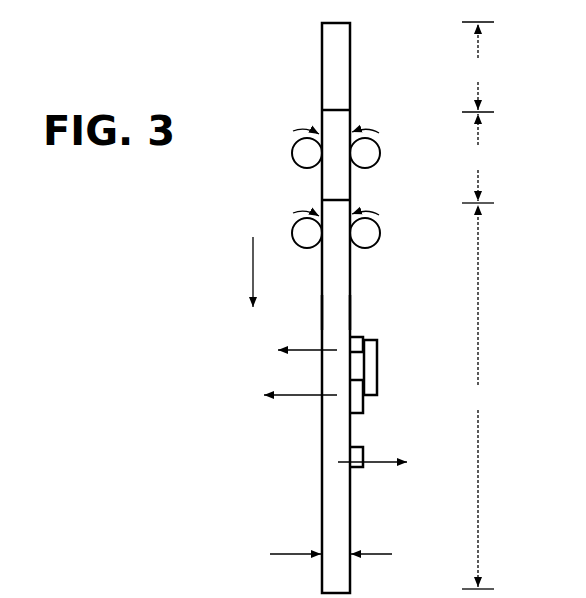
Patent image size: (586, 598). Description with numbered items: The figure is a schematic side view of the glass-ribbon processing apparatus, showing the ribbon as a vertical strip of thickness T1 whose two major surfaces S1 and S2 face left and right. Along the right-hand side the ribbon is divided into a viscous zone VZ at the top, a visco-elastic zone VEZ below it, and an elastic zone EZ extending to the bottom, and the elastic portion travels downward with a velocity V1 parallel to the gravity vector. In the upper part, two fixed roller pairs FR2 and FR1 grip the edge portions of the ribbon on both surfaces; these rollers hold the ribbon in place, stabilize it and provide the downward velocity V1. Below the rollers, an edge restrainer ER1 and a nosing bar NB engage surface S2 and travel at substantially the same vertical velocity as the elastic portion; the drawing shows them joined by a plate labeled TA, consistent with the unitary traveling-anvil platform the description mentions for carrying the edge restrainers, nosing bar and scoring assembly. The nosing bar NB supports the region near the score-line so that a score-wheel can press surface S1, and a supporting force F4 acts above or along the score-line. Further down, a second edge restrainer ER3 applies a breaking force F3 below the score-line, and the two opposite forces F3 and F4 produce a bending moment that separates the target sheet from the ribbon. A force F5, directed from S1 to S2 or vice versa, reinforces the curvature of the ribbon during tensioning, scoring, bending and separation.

The fixed roller pair FR2 is at (289, 141).
The fixed roller pair FR1 is at (289, 228).
The velocity V1 is at (266, 272).
The major surface S1 is at (321, 312).
The major surface S2 is at (352, 310).
The edge restrainer ER1 is at (364, 331).
The tooth / clamping element TA is at (382, 364).
The nosing bar NB is at (355, 412).
The edge restrainer ER3 is at (370, 469).
The breaking force F3 is at (383, 462).
The supporting force F4 is at (288, 395).
The force F5 is at (296, 350).
The thickness T1 is at (310, 554).
The viscous zone VZ is at (478, 67).
The visco-elastic zone VEZ is at (478, 158).
The elastic zone EZ is at (478, 397).